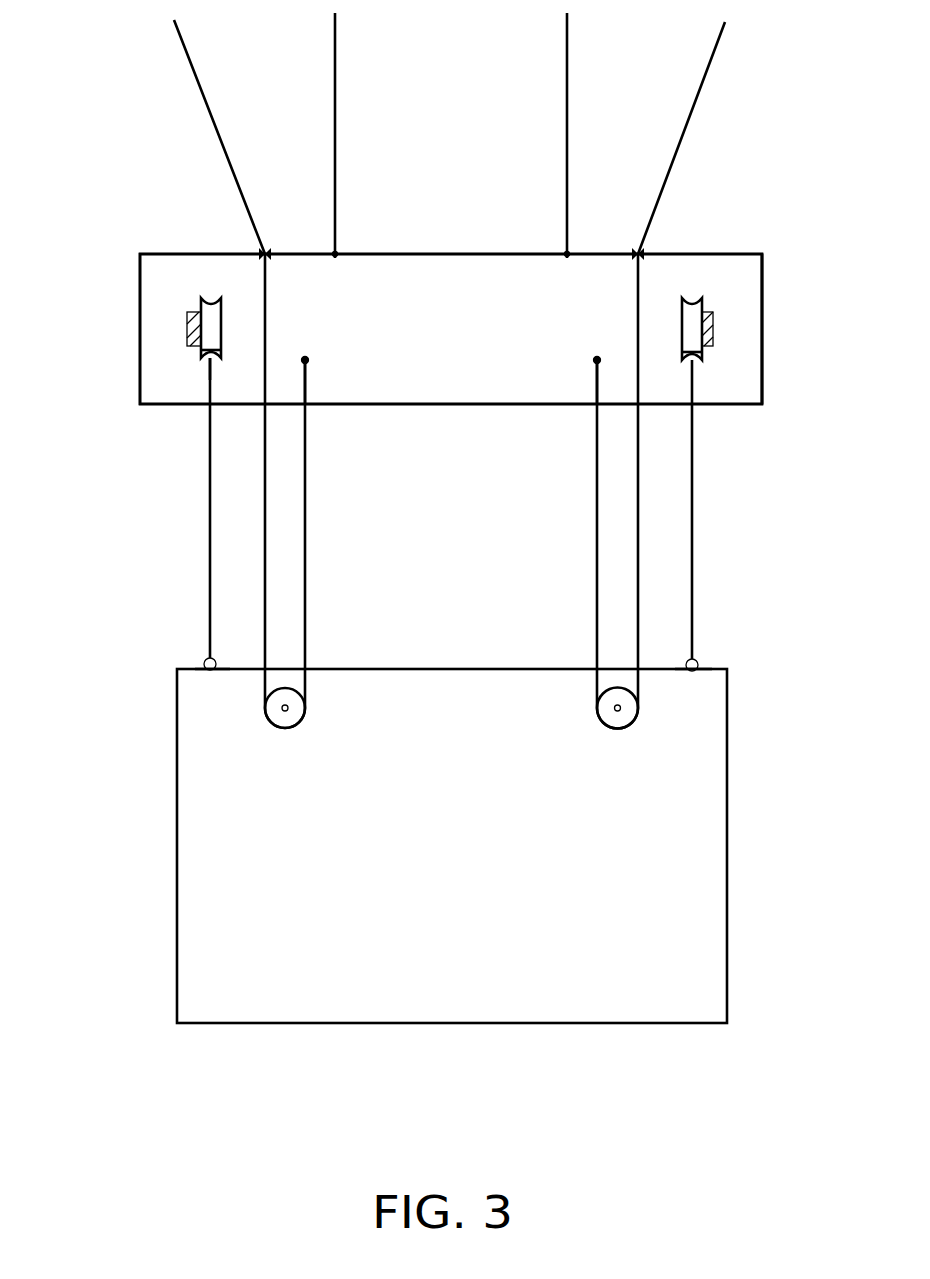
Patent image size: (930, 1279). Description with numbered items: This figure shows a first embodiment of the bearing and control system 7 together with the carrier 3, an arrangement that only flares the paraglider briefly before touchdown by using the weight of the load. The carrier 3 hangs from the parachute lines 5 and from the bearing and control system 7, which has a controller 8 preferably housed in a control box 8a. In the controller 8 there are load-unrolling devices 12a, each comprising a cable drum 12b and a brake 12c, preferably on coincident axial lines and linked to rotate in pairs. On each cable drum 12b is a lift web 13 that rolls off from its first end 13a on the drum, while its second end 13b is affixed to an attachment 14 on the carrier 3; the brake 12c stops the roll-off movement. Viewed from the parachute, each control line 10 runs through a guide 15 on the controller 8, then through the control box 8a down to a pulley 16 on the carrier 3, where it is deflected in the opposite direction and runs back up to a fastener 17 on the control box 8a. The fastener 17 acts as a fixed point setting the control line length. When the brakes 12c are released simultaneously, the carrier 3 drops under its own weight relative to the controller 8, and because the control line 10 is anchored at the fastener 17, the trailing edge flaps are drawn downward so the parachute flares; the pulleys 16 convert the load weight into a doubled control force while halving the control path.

The carrier or load unit 3 is at (713, 822).
The parachute lines 5 is at (335, 73).
The bearing and control system 7 is at (770, 432).
The controller 8 is at (782, 272).
The control box 8a is at (762, 298).
The control line 10 is at (178, 36).
The load-unrolling device 12a is at (163, 332).
The cable drum 12b is at (202, 352).
The brake 12c is at (192, 300).
The lift web 13 is at (210, 555).
The first end of lift web 13a is at (238, 342).
The second end of lift web 13b is at (206, 658).
The attachment 14 is at (212, 672).
The guide 15 is at (280, 244).
The pulley 16 is at (292, 720).
The fastener 17 is at (305, 360).